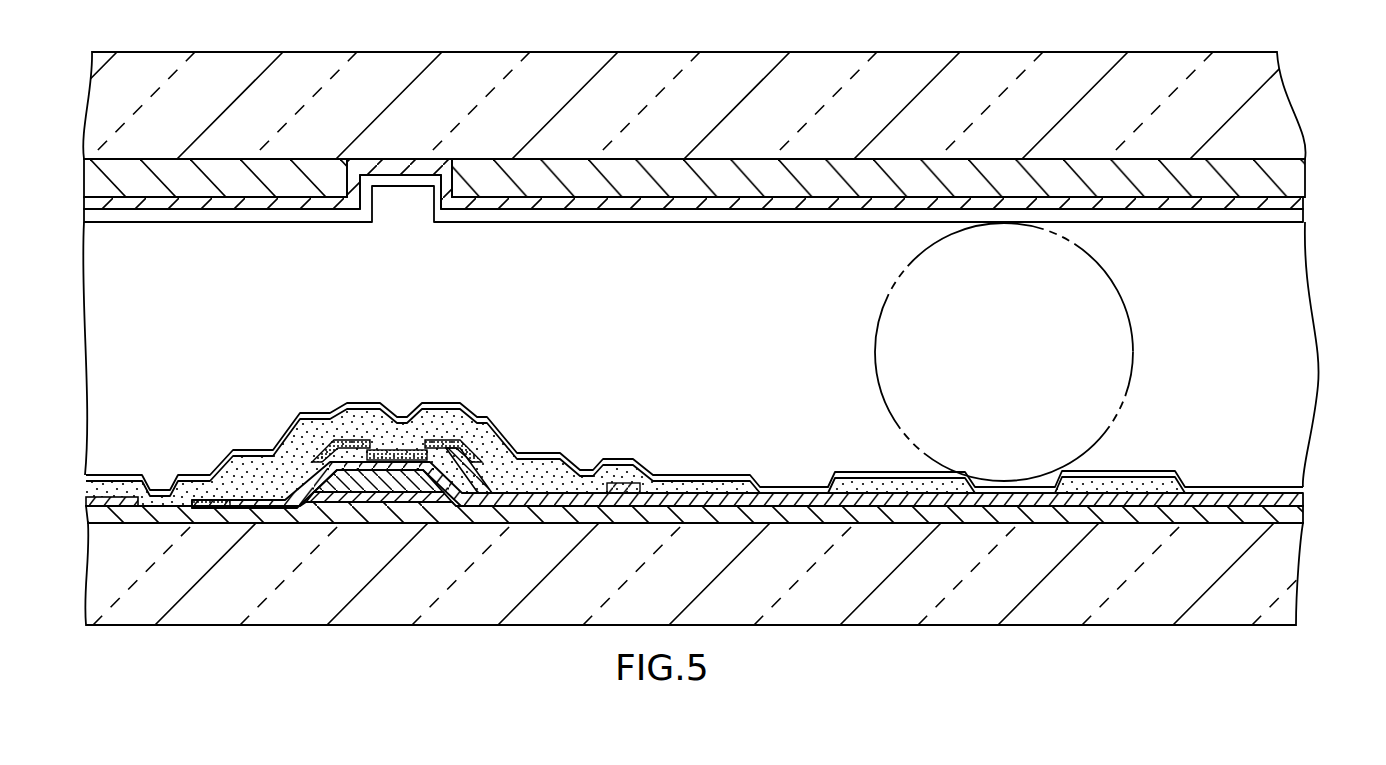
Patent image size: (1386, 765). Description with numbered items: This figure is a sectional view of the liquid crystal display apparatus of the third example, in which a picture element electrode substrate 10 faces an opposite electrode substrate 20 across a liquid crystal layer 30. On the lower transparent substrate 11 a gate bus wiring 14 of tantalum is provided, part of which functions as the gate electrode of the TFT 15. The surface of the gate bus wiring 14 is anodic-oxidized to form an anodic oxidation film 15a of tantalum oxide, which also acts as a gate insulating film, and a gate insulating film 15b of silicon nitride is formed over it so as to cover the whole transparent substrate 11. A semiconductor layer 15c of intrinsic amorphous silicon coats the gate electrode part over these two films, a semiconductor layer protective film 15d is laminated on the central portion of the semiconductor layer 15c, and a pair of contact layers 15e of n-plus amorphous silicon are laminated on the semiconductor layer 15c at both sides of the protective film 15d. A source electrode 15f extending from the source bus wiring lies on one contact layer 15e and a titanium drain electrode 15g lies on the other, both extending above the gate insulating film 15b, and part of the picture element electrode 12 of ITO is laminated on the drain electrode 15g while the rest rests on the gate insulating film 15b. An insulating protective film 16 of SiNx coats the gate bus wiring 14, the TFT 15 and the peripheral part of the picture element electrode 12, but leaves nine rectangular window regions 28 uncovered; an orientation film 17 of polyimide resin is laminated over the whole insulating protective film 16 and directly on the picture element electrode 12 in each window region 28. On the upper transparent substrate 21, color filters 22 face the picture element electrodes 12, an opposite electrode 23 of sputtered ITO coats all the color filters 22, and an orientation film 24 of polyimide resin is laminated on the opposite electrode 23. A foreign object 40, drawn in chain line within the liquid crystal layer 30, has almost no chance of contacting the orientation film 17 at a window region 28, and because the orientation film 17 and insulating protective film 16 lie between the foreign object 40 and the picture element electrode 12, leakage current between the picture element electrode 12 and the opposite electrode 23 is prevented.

The picture element electrode substrate 10 is at (1375, 466).
The transparent substrate 11 is at (1242, 613).
The picture element electrode 12 is at (1302, 500).
The gate bus wiring 14 is at (417, 515).
The TFT 15 is at (367, 393).
The anodic oxidation film 15a is at (477, 443).
The gate insulating film 15b is at (533, 448).
The semiconductor layer 15c is at (335, 458).
The semiconductor layer protective film 15d is at (402, 443).
The contact layer 15e is at (307, 457).
The source electrode 15f is at (253, 458).
The drain electrode 15g is at (571, 458).
The insulating protective film 16 is at (437, 423).
The orientation film 17 is at (650, 469).
The opposite electrode substrate 20 is at (1313, 18).
The transparent substrate 21 is at (1270, 100).
The color filter 22 is at (1288, 188).
The opposite electrode 23 is at (1296, 201).
The orientation film 24 is at (1290, 221).
The window region 28 is at (774, 498).
The liquid crystal layer 30 is at (1312, 386).
The foreign object 40 is at (1130, 372).